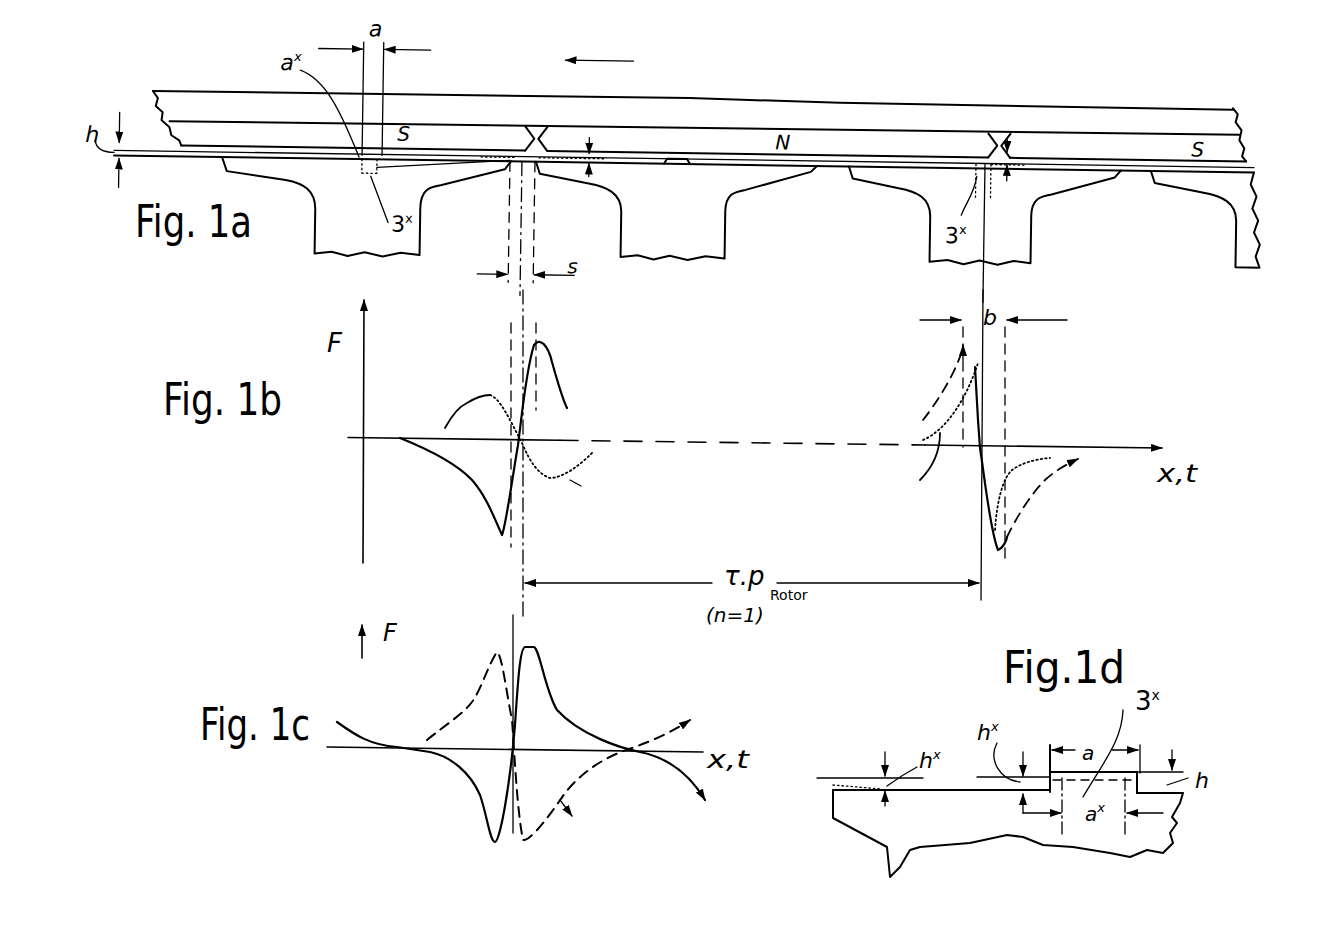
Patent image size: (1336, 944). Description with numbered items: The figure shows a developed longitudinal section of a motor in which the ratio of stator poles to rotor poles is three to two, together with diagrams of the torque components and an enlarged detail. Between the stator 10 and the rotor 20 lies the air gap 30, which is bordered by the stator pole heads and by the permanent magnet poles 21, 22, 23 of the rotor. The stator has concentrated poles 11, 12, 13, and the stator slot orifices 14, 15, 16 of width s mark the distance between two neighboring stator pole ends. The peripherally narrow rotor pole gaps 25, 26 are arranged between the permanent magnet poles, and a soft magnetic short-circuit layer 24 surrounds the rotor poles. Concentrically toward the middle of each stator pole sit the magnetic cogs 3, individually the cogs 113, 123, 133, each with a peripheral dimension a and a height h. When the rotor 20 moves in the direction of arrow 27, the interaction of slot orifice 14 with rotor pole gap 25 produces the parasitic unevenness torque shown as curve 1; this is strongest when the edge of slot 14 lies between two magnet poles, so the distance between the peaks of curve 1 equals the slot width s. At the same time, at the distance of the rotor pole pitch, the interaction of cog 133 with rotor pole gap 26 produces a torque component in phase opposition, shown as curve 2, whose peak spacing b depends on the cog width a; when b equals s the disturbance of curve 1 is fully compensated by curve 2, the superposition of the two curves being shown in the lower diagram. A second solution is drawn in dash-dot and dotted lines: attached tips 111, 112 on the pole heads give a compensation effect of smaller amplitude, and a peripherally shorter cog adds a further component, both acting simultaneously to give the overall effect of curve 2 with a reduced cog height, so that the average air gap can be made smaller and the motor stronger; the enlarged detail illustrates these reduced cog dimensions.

In FIG. 1A, the stator 10 is at (1259, 179).
In FIG. 1A, the rotor 20 is at (1253, 116).
In FIG. 1A, the stator pole 11 is at (366, 207).
In FIG. 1A, the stator pole 12 is at (676, 212).
In FIG. 1A, the stator pole 13 is at (984, 216).
In FIG. 1A, the stator slot orifice 14 is at (512, 162).
In FIG. 1A, the stator slot orifice 15 is at (830, 160).
In FIG. 1A, the rotor slot 16 is at (1140, 162).
In FIG. 1A, the permanent magnet pole 21 is at (353, 133).
In FIG. 1A, the permanent magnet pole 22 is at (767, 142).
In FIG. 1A, the permanent magnet pole 23 is at (1128, 149).
In FIG. 1A, the soft magnetic short-circuit layer 24 is at (650, 102).
In FIG. 1A, the rotor pole gap 25 is at (530, 114).
In FIG. 1A, the rotor pole gap 26 is at (1007, 124).
In FIG. 1A, the arrow 27 is at (600, 42).
In FIG. 1A, the air gap 30 is at (873, 151).
In FIG. 1A, the magnetic cog 3 is at (680, 143).
In FIG. 1A, the attached tip 111 is at (511, 154).
In FIG. 1A, the attached tip 112 is at (540, 159).
In FIG. 1D, the attached tip 112 is at (843, 778).
In FIG. 1A, the magnetic cog 113 is at (400, 170).
In FIG. 1A, the magnetic cog 123 is at (686, 155).
In FIG. 1D, the magnetic cog 123 is at (1138, 772).
In FIG. 1A, the magnetic cog 133 is at (997, 153).
In FIG. 1B, the curve of slot torque unevenness 1 is at (550, 368).
In FIG. 1C, the curve of slot torque unevenness 1 is at (364, 736).
In FIG. 1B, the curve of useful torque component 2 is at (943, 388).
In FIG. 1C, the curve of useful torque component 2 is at (472, 704).